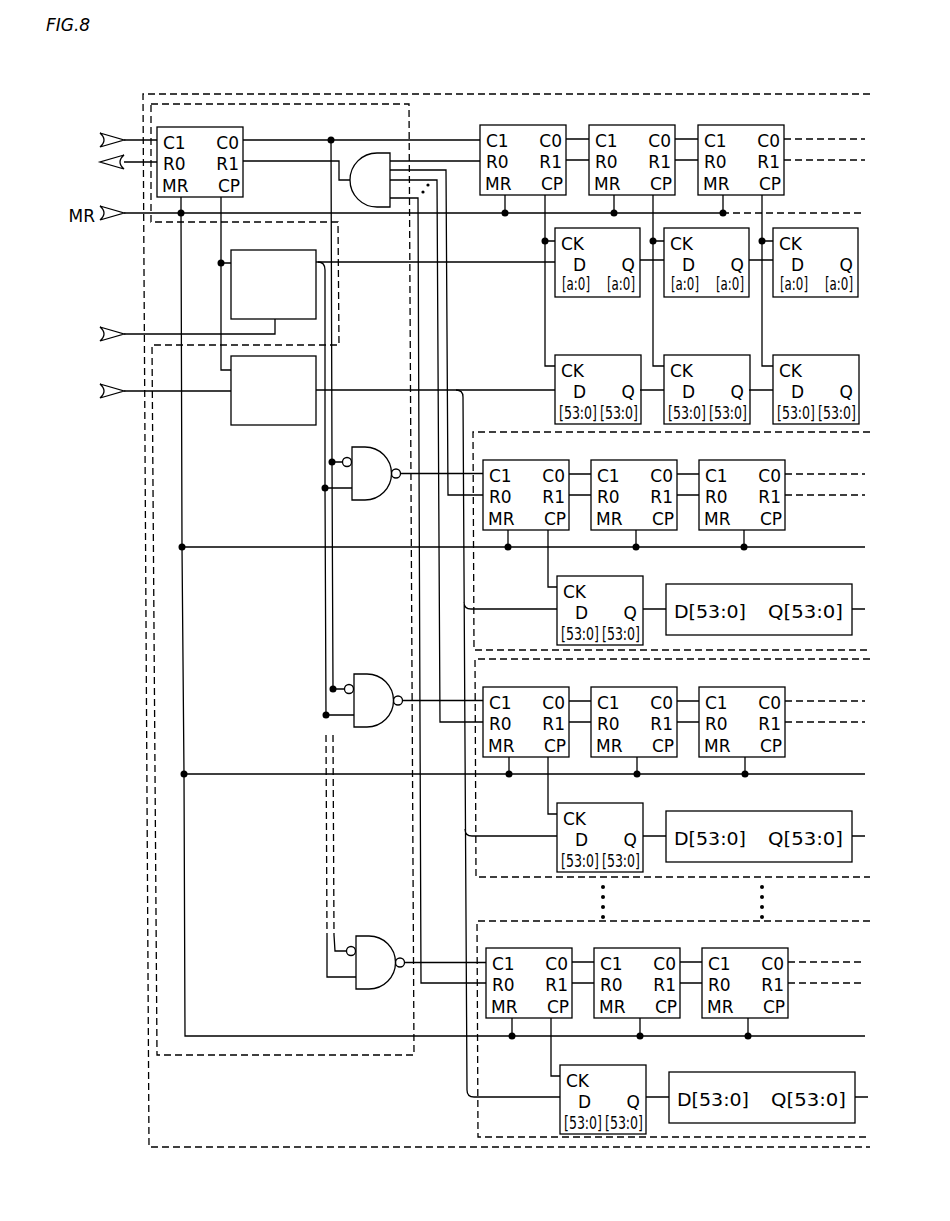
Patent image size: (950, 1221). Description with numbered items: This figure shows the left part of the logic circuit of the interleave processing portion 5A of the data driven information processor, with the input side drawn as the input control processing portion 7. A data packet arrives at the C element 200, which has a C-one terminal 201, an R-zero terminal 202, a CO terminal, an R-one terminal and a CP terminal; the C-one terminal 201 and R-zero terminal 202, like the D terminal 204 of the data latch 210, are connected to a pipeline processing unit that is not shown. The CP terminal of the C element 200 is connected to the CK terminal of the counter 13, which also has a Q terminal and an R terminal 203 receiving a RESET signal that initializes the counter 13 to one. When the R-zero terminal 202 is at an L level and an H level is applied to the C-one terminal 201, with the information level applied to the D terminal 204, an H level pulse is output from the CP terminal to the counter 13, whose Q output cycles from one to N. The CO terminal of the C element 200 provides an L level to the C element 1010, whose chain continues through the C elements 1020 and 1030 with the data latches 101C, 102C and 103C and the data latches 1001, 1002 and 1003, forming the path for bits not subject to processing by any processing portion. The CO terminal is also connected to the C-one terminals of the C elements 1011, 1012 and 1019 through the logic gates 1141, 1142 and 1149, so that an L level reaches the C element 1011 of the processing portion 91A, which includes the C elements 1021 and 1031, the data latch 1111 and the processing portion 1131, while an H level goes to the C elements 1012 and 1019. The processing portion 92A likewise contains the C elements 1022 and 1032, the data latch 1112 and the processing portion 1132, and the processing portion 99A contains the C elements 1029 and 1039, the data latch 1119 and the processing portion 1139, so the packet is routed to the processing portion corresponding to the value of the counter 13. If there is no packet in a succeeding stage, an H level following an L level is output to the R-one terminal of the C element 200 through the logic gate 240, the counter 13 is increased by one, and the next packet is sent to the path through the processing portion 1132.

The input control processing portion 7 is at (270, 98).
The interleave processing portion 5A is at (343, 95).
The C element 200 is at (200, 151).
The C1 terminal 201 is at (100, 130).
The RO terminal 202 is at (100, 175).
The RESET input terminal 203 is at (86, 325).
The D terminal 204 is at (80, 383).
The counter 13 is at (273, 275).
The data latch 210 is at (273, 400).
The logic gate 240 is at (391, 174).
The C element 1010 is at (523, 150).
The C element 1020 is at (632, 150).
The C element 1030 is at (741, 150).
The data latch 101C is at (597, 274).
The data latch 102C is at (706, 274).
The data latch 103C is at (815, 274).
The data latch 1001 is at (598, 378).
The data latch 1002 is at (707, 378).
The data latch 1003 is at (816, 378).
The logic gate 1141 is at (372, 463).
The logic gate 1142 is at (374, 690).
The logic gate 1149 is at (376, 952).
The processing portion 91A is at (805, 433).
The C element 1011 is at (526, 484).
The C element 1021 is at (634, 484).
The C element 1031 is at (742, 484).
The data latch 1111 is at (600, 599).
The processing portion 1131 is at (759, 598).
The processing portion 92A is at (805, 660).
The C element 1012 is at (526, 711).
The C element 1022 is at (634, 711).
The C element 1032 is at (742, 711).
The data latch 1112 is at (600, 826).
The processing portion 1132 is at (759, 825).
The processing portion 99A is at (805, 921).
The C element 1019 is at (529, 972).
The C element 1029 is at (637, 972).
The C element 1039 is at (745, 972).
The data latch 1119 is at (603, 1088).
The processing portion 1139 is at (762, 1086).